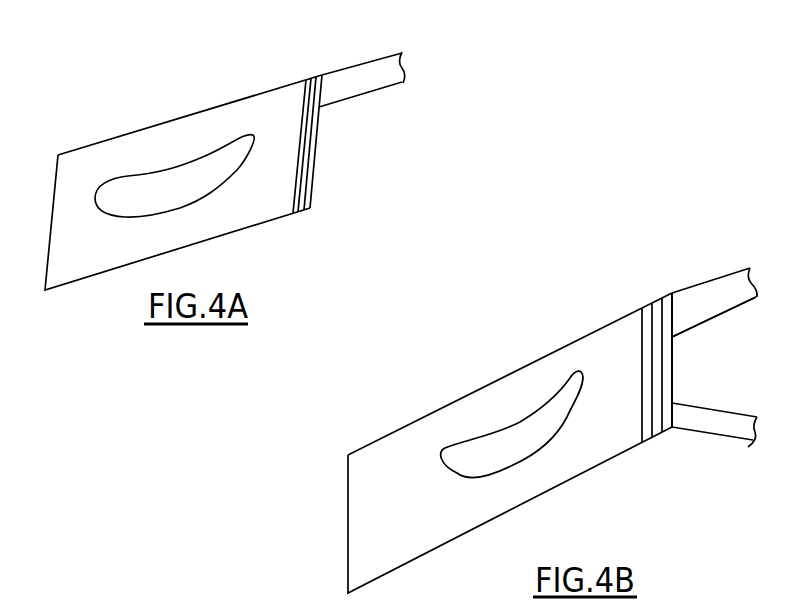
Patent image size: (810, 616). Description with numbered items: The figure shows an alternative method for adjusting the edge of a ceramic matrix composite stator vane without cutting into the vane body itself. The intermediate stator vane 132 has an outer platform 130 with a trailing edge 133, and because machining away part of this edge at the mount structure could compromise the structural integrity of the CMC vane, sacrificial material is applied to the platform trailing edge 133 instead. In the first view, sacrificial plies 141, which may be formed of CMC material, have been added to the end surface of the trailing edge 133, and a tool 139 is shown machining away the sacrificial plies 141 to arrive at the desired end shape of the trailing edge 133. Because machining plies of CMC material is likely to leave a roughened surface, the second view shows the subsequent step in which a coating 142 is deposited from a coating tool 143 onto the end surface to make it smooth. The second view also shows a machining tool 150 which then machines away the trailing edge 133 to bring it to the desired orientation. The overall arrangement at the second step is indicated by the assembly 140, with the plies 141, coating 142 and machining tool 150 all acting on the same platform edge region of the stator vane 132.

In FIG. 4A, the outer platform 130 is at (88, 162).
In FIG. 4B, the outer platform 130 is at (382, 480).
In FIG. 4A, the intermediate stator vane 132 is at (147, 147).
In FIG. 4B, the intermediate stator vane 132 is at (480, 410).
In FIG. 4A, the trailing edge 133 is at (304, 142).
In FIG. 4B, the trailing edge 133 is at (652, 377).
In FIG. 4A, the tool 139 is at (360, 78).
In FIG. 4B, the mounting assembly 140 is at (667, 457).
In FIG. 4B, the sacrificial plies 141 is at (673, 290).
In FIG. 4B, the coating 142 is at (675, 315).
In FIG. 4B, the coating tool 143 is at (724, 302).
In FIG. 4B, the machining tool 150 is at (712, 423).